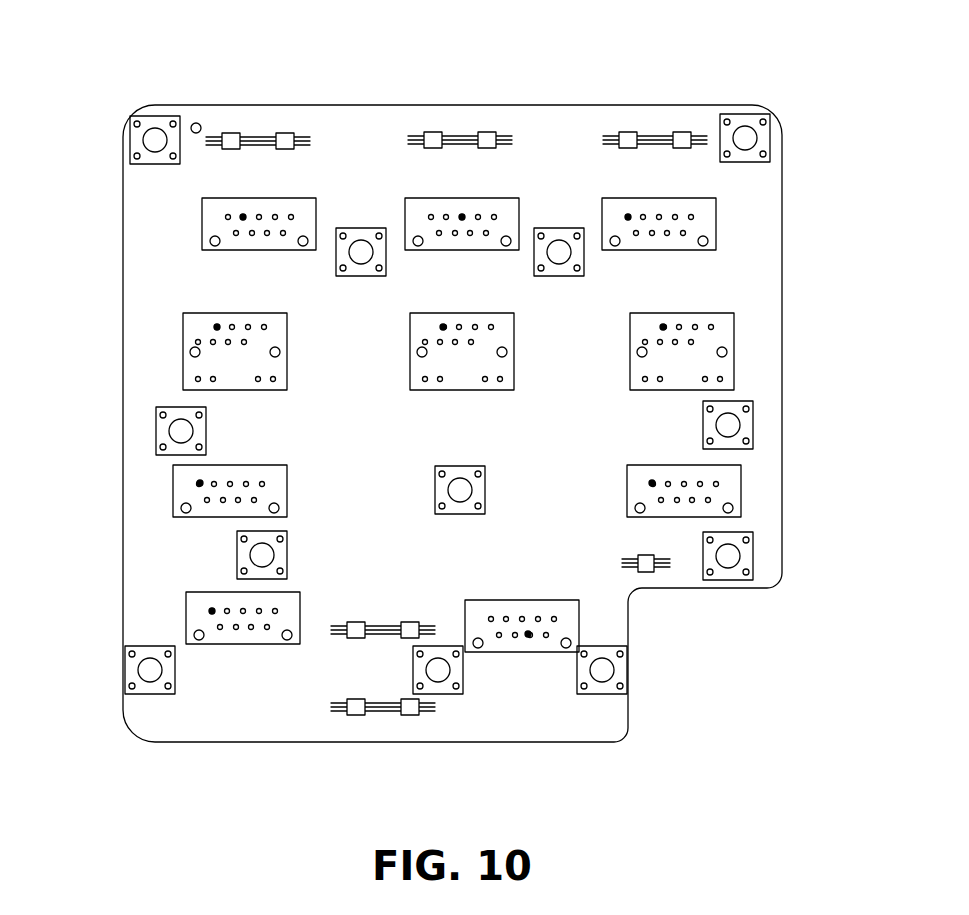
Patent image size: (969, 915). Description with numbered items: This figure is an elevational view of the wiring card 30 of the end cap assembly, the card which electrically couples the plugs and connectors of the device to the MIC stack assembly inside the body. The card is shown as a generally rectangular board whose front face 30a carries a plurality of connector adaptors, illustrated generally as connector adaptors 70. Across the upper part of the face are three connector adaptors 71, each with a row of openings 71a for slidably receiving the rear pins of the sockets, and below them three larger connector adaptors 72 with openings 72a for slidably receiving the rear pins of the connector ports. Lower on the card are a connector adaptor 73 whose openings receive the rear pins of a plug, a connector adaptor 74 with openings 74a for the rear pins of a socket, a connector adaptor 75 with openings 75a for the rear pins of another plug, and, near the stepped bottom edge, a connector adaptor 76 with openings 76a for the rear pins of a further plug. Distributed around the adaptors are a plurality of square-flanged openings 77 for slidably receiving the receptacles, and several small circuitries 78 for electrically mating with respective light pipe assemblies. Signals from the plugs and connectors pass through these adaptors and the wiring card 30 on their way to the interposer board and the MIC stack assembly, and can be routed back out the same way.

The wiring card 30 is at (537, 95).
The front face 30a is at (745, 280).
The connector adaptors 70 is at (745, 362).
The connector adaptors 71 is at (210, 228).
The openings 71a is at (243, 217).
The connector adaptors 72 is at (193, 343).
The openings 72a is at (217, 327).
The connector adaptor 73 is at (280, 477).
The connector adaptor 74 is at (727, 489).
The openings 74a is at (200, 483).
The connector adaptor 75 is at (287, 603).
The openings 75a is at (212, 611).
The connector adaptor 76 is at (478, 613).
The openings 76a is at (528, 636).
The openings 77 is at (155, 140).
The circuitries 78 is at (258, 130).